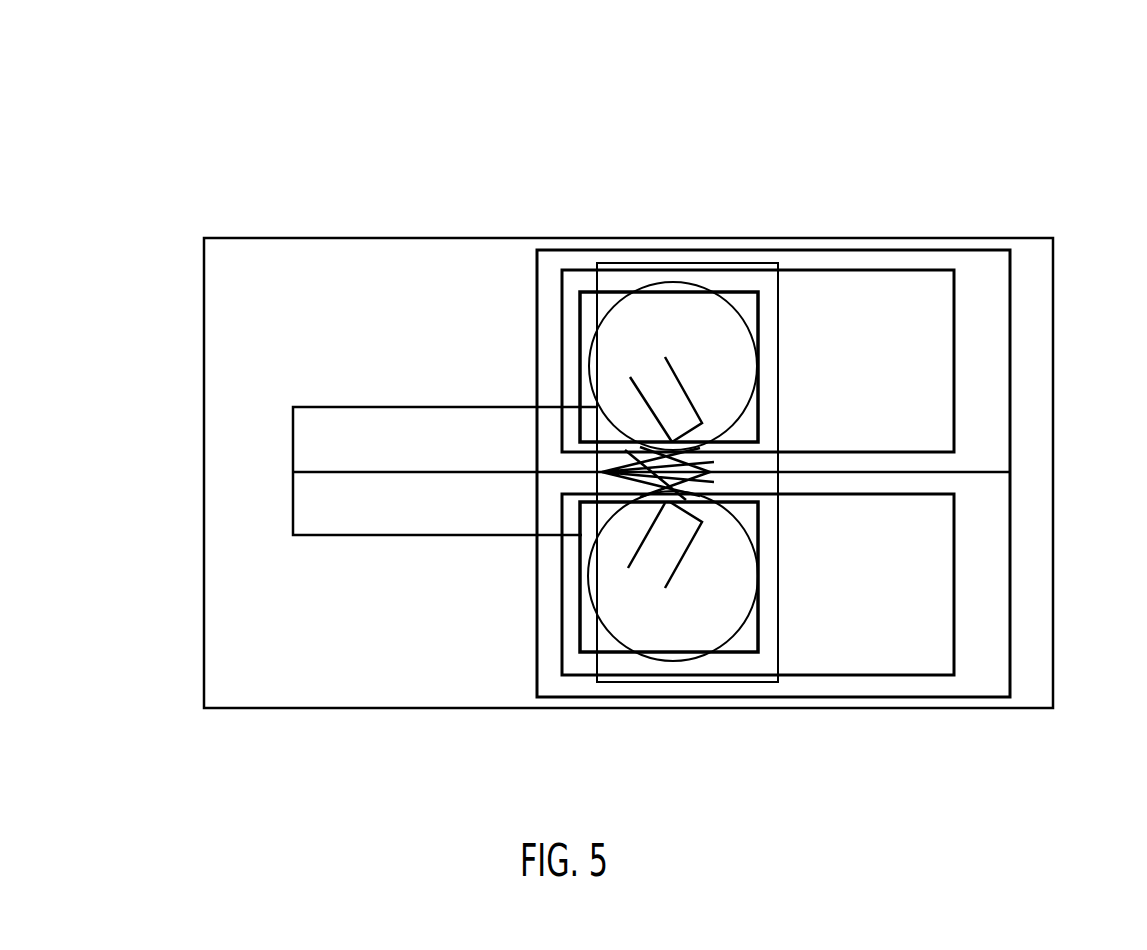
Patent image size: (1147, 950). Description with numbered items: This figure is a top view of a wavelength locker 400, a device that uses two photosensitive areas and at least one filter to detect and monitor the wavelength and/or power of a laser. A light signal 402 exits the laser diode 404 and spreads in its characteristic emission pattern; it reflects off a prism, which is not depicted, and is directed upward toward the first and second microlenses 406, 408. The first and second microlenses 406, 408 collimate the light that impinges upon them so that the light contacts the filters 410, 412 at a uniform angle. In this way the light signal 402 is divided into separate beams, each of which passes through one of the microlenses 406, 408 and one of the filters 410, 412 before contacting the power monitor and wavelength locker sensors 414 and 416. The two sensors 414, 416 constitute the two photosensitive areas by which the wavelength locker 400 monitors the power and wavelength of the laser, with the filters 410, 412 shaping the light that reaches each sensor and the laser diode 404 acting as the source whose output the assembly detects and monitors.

The wavelength locker 400 is at (903, 86).
The light signal 402 is at (602, 472).
The laser diode 404 is at (292, 503).
The first microlens 406 is at (695, 290).
The second microlens 408 is at (672, 661).
The filter 410 is at (980, 270).
The filter 412 is at (993, 513).
The power monitor sensor 414 is at (877, 285).
The wavelength locker sensor 416 is at (875, 675).